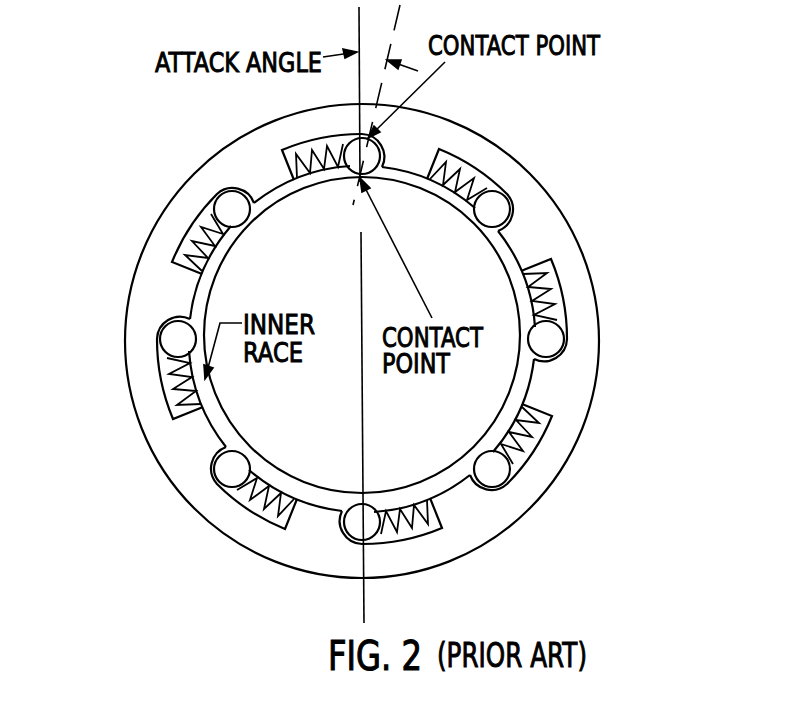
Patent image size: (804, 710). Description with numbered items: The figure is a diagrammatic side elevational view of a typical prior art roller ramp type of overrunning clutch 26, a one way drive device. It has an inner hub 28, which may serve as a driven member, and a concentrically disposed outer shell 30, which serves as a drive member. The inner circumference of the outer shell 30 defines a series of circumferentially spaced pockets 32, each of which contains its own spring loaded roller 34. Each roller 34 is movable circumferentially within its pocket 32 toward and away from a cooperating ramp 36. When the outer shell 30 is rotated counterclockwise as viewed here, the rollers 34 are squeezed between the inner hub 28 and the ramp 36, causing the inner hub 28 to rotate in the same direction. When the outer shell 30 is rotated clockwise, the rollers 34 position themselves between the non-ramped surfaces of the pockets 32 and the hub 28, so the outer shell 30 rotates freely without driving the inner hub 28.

The roller ramp type of overrunning clutch 26 is at (644, 212).
The inner hub 28 is at (447, 412).
The outer shell 30 is at (126, 292).
The pockets 32 is at (185, 243).
The spring loaded roller 34 is at (218, 206).
The ramp 36 is at (224, 181).